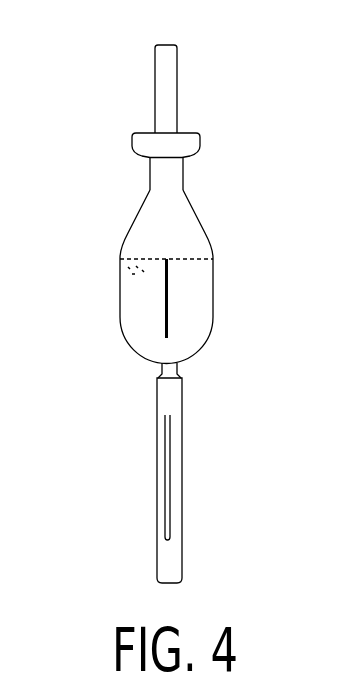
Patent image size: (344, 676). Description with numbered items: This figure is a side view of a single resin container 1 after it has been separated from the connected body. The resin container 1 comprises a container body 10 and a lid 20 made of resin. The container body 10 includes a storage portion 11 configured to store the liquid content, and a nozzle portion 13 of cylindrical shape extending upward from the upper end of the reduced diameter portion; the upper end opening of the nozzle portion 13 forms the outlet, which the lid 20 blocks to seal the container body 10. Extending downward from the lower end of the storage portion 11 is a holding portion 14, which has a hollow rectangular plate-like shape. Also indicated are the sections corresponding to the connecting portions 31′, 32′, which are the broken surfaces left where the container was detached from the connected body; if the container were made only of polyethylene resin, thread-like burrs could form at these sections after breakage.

The resin container 1 is at (57, 93).
The lid 20 is at (141, 80).
The container body 10 is at (138, 200).
The nozzle portion 13 is at (171, 172).
The storage portion 11 is at (205, 294).
The holding portion 14 is at (182, 449).
The connecting portion 31′ is at (165, 310).
The connecting portion 32′ is at (163, 500).